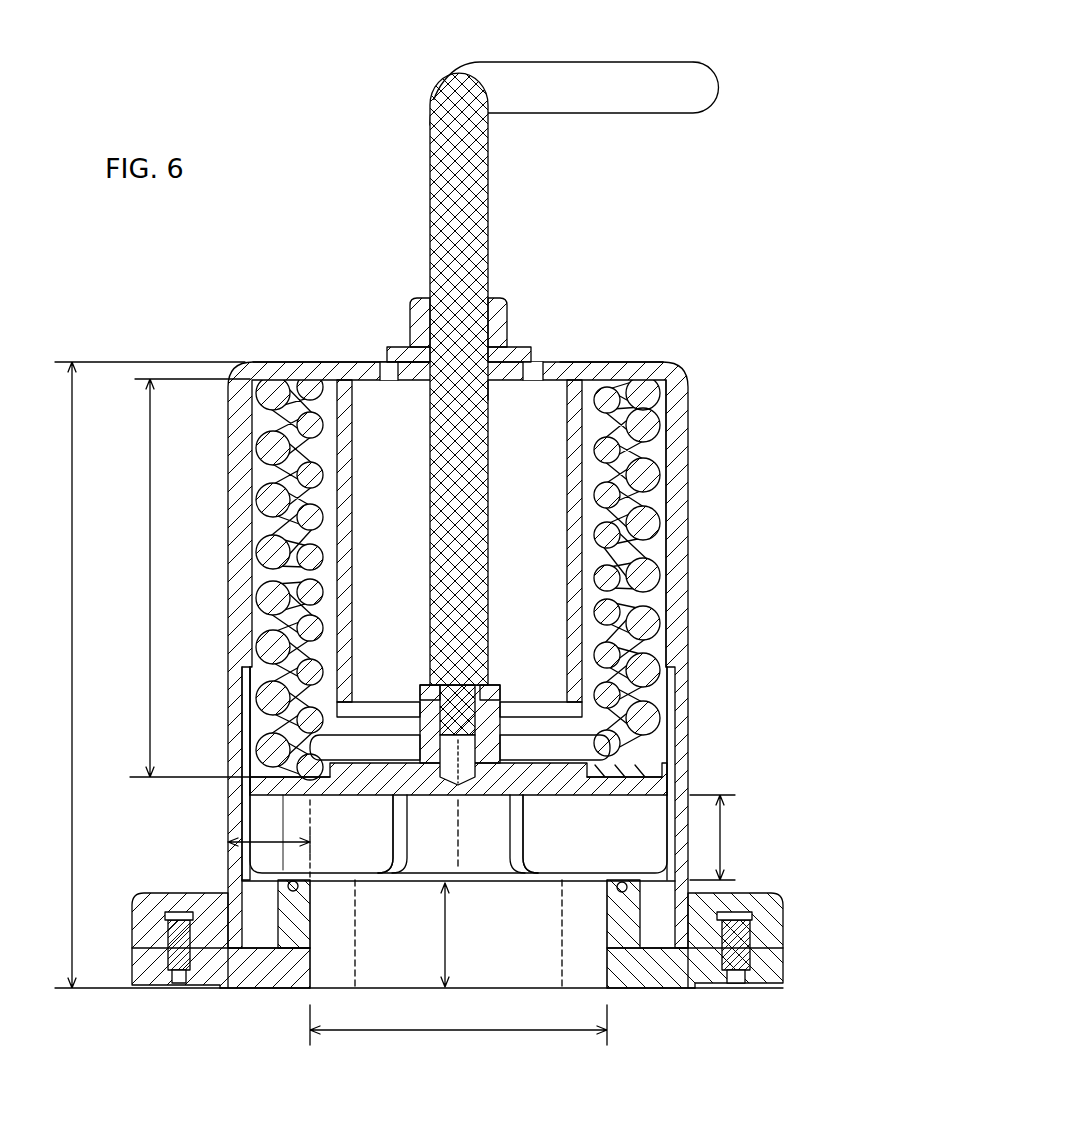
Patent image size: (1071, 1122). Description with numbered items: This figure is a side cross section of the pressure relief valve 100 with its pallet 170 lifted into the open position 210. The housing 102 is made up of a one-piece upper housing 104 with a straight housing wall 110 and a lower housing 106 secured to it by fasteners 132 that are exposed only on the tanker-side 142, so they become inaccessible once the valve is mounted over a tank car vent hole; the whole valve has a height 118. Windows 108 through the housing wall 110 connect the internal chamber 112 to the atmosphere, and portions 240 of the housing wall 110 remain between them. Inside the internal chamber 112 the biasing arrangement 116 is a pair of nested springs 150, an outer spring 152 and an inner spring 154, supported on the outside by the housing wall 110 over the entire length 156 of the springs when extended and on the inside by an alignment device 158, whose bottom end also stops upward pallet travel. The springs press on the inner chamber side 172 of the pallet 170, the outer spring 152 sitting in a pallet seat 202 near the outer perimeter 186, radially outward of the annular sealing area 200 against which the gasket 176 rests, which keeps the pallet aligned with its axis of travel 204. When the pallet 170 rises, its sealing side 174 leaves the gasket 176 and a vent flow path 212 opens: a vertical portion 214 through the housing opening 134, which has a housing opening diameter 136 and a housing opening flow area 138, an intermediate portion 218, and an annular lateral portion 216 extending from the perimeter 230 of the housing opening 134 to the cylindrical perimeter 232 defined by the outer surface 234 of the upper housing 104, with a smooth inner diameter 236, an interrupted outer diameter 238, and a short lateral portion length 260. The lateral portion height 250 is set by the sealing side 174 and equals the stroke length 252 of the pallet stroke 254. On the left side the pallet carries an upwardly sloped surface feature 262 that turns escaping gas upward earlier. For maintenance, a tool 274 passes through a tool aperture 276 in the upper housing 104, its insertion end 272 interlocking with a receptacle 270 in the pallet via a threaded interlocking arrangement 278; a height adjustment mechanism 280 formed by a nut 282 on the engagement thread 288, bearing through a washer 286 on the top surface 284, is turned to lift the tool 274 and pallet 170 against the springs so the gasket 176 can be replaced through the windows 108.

The pressure relief valve 100 is at (670, 290).
The housing 102 is at (528, 655).
The upper housing 104 is at (528, 655).
The lower housing 106 is at (655, 990).
The window 108 is at (456, 577).
The housing wall 110 is at (688, 400).
The internal chamber 112 is at (688, 452).
The biasing arrangement 116 is at (341, 334).
The height 118 is at (72, 690).
The fasteners 132 is at (736, 932).
The housing opening 134 is at (458, 934).
The housing opening diameter 136 is at (465, 1030).
The housing opening flow area 138 is at (478, 961).
The tanker-side 142 is at (768, 988).
The nested springs 150 is at (294, 343).
The outer spring 152 is at (285, 495).
The inner spring 154 is at (353, 486).
The entire length 156 is at (150, 630).
The alignment device 158 is at (567, 502).
The pallet 170 is at (540, 760).
The inner chamber side 172 is at (410, 747).
The sealing side 174 is at (628, 853).
The gasket 176 is at (608, 888).
The outer perimeter 186 is at (256, 772).
The sealing area 200 is at (299, 803).
The pallet seat 202 is at (672, 765).
The axis of travel 204 is at (458, 860).
The open position 210 is at (710, 775).
The vent flow path 212 is at (358, 1004).
The vertical portion 214 is at (445, 935).
The lateral portion 216 is at (216, 845).
The intermediate portion 218 is at (368, 855).
The perimeter 230 is at (310, 947).
The cylindrical perimeter 232 is at (245, 870).
The outer surface 234 is at (246, 738).
The inner diameter 236 is at (312, 842).
The outer diameter 238 is at (185, 777).
The portions of the housing wall 240 is at (492, 860).
The lateral portion height 250 is at (275, 820).
The stroke length 252 is at (757, 837).
The stroke 254 is at (722, 842).
The lateral portion length 260 is at (228, 843).
The upwardly sloped surface feature 262 is at (250, 797).
The receptacle 270 is at (425, 685).
The insertion end 272 is at (457, 703).
The tool 274 is at (432, 438).
The tool aperture 276 is at (489, 385).
The interlocking arrangement 278 is at (493, 685).
The height adjustment mechanism 280 is at (507, 311).
The nut 282 is at (510, 326).
The top surface 284 is at (620, 362).
The washer 286 is at (531, 355).
The engagement thread 288 is at (546, 373).